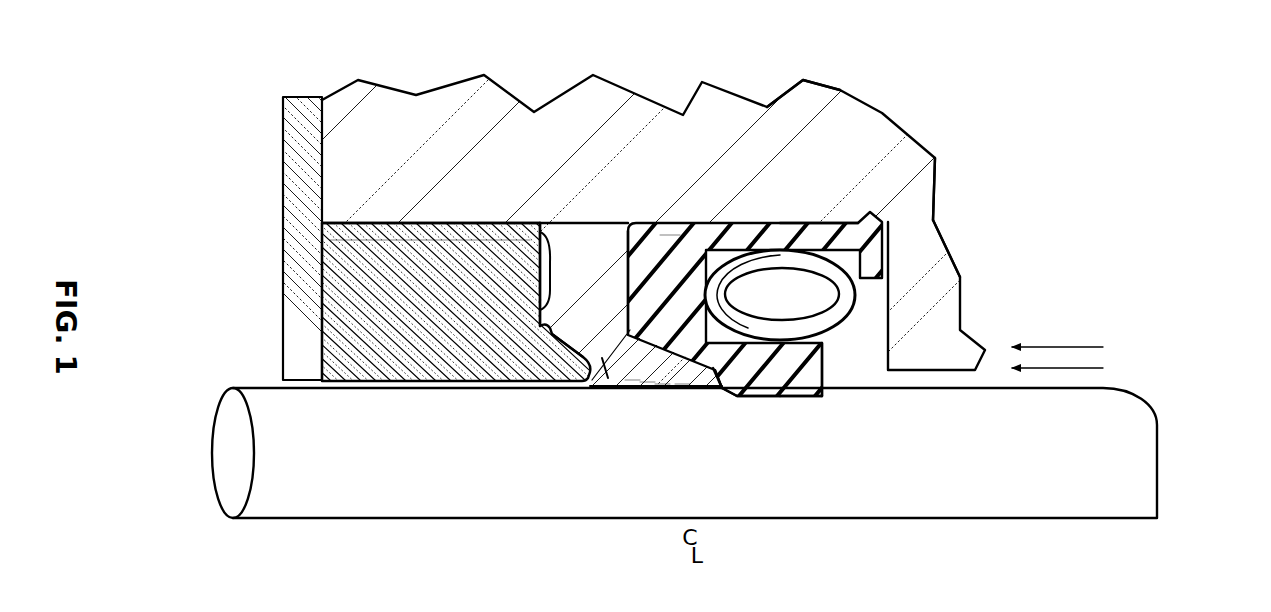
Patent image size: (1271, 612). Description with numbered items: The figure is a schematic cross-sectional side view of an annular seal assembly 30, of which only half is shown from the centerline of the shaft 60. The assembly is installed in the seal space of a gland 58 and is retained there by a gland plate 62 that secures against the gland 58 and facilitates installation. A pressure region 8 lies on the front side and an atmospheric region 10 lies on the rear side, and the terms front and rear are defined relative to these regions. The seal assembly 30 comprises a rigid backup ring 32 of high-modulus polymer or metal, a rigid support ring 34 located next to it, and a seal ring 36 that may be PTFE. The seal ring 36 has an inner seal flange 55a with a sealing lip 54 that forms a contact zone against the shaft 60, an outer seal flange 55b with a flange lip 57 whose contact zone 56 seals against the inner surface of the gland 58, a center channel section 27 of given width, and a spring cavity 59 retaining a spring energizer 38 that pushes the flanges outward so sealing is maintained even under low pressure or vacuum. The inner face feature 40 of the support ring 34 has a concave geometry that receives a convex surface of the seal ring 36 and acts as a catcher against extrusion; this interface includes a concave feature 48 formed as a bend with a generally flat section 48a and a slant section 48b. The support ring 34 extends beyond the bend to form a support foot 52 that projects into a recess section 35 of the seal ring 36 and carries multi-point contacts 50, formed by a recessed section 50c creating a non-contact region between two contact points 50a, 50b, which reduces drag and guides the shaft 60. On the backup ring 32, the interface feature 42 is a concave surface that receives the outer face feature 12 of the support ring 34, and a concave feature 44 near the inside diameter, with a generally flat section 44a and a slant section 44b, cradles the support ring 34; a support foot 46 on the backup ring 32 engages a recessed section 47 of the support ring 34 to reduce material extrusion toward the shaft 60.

The pressure region 8 is at (1008, 302).
The atmospheric region 10 is at (205, 226).
The outer face feature 12 is at (550, 272).
The center channel section 27 is at (668, 307).
The seal assembly 30 is at (933, 70).
The rigid backup ring 32 is at (337, 292).
The rigid support ring 34 is at (550, 277).
The recess section 35 is at (713, 385).
The seal ring 36 is at (672, 237).
The spring energizer 38 is at (852, 297).
The inner face feature 40 is at (568, 222).
The interface feature of the rigid backup ring 42 is at (525, 223).
The concave feature 44 is at (550, 330).
The generally flat section 44a is at (540, 230).
The slant section 44b is at (550, 327).
The support foot 46 is at (574, 385).
The recessed section 47 is at (600, 385).
The concave feature 48 is at (614, 385).
The generally flat section 48a is at (625, 285).
The slant section 48b is at (681, 385).
The multi-point contacts 50 is at (628, 385).
The contact point 50a is at (712, 385).
The contact point 50b is at (628, 385).
The recessed section 50c is at (660, 386).
The support foot 52 is at (722, 388).
The sealing lip 54 is at (812, 395).
The inner seal flange 55a is at (825, 391).
The outer seal flange 55b is at (818, 223).
The contact zone 56 is at (882, 216).
The flange lip 57 is at (886, 248).
The gland 58 is at (788, 120).
The spring cavity 59 is at (823, 300).
The shaft 60 is at (228, 437).
The gland plate 62 is at (300, 328).